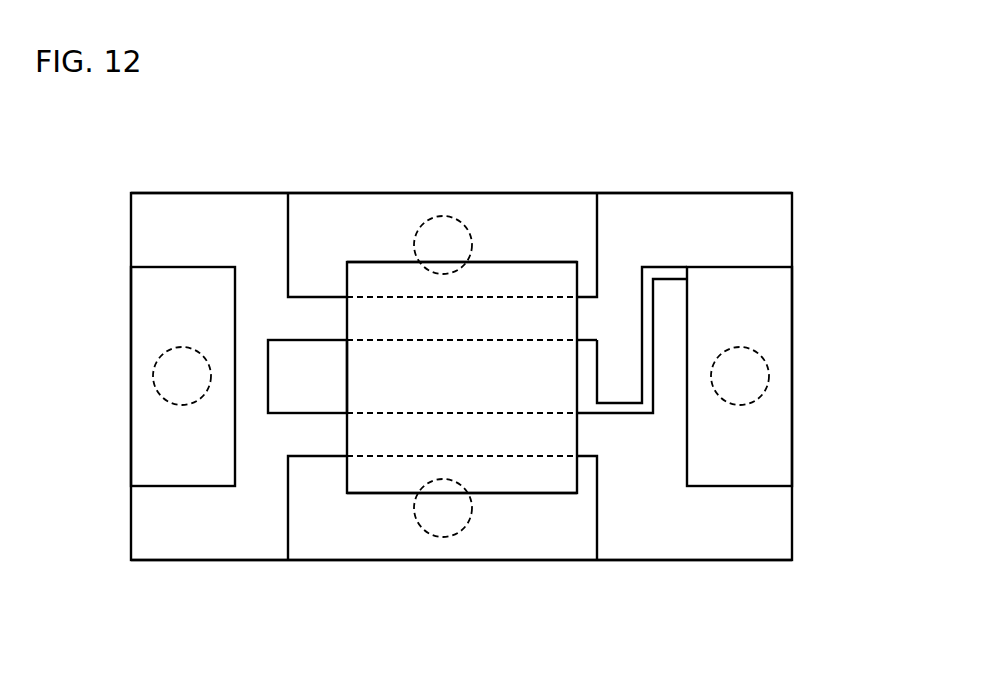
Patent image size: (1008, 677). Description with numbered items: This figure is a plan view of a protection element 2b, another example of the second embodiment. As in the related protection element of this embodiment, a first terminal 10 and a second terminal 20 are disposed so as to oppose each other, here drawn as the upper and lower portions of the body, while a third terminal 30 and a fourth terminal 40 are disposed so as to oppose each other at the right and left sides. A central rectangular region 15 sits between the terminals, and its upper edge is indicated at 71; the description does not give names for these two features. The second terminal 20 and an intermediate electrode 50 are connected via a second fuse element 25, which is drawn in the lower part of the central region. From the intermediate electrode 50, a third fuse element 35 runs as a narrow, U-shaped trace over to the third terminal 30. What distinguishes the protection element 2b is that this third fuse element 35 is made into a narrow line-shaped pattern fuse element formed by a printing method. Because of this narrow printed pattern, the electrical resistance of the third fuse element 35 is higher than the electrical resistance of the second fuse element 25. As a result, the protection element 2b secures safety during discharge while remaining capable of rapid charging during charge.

The protection element 2b is at (770, 150).
The first terminal 10 is at (300, 190).
The second terminal 20 is at (328, 565).
The third terminal 30 is at (797, 300).
The fourth terminal 40 is at (127, 453).
The element body 15 is at (555, 277).
The upper surface of element body 71 is at (498, 258).
The second fuse element 25 is at (525, 475).
The intermediate electrode 50 is at (590, 346).
The third fuse element 35 is at (643, 415).